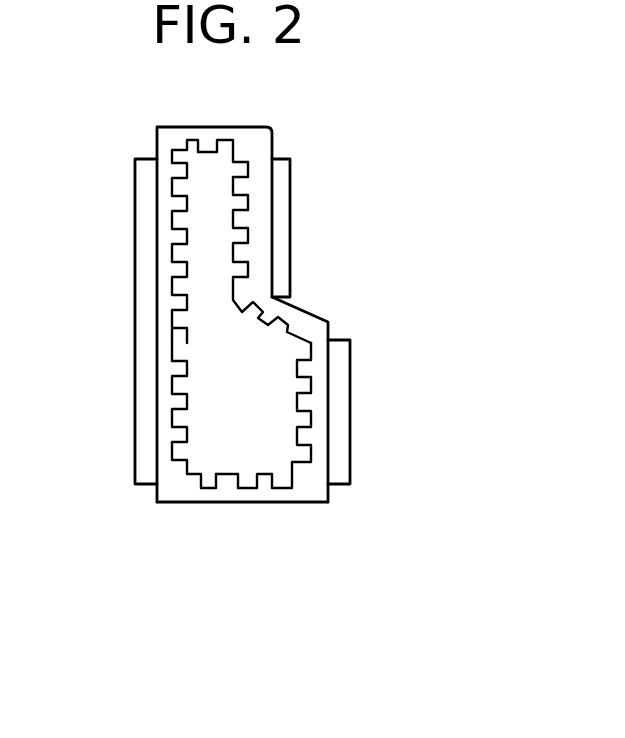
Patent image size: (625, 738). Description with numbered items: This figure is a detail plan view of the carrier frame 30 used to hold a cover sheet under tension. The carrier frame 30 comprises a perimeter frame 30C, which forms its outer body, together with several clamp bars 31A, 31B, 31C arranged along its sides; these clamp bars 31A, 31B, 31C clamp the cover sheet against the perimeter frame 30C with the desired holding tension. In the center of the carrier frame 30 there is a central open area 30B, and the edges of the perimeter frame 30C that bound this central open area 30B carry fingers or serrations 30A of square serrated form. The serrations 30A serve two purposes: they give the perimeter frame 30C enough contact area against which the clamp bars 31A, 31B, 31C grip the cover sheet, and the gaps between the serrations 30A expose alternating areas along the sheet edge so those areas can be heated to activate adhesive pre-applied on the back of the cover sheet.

The carrier frame 30 is at (362, 512).
The serrations 30A is at (183, 415).
The central open area 30B is at (270, 358).
The perimeter frame 30C is at (268, 490).
The clamp bar 31A is at (140, 348).
The clamp bar 31B is at (338, 415).
The clamp bar 31C is at (285, 230).